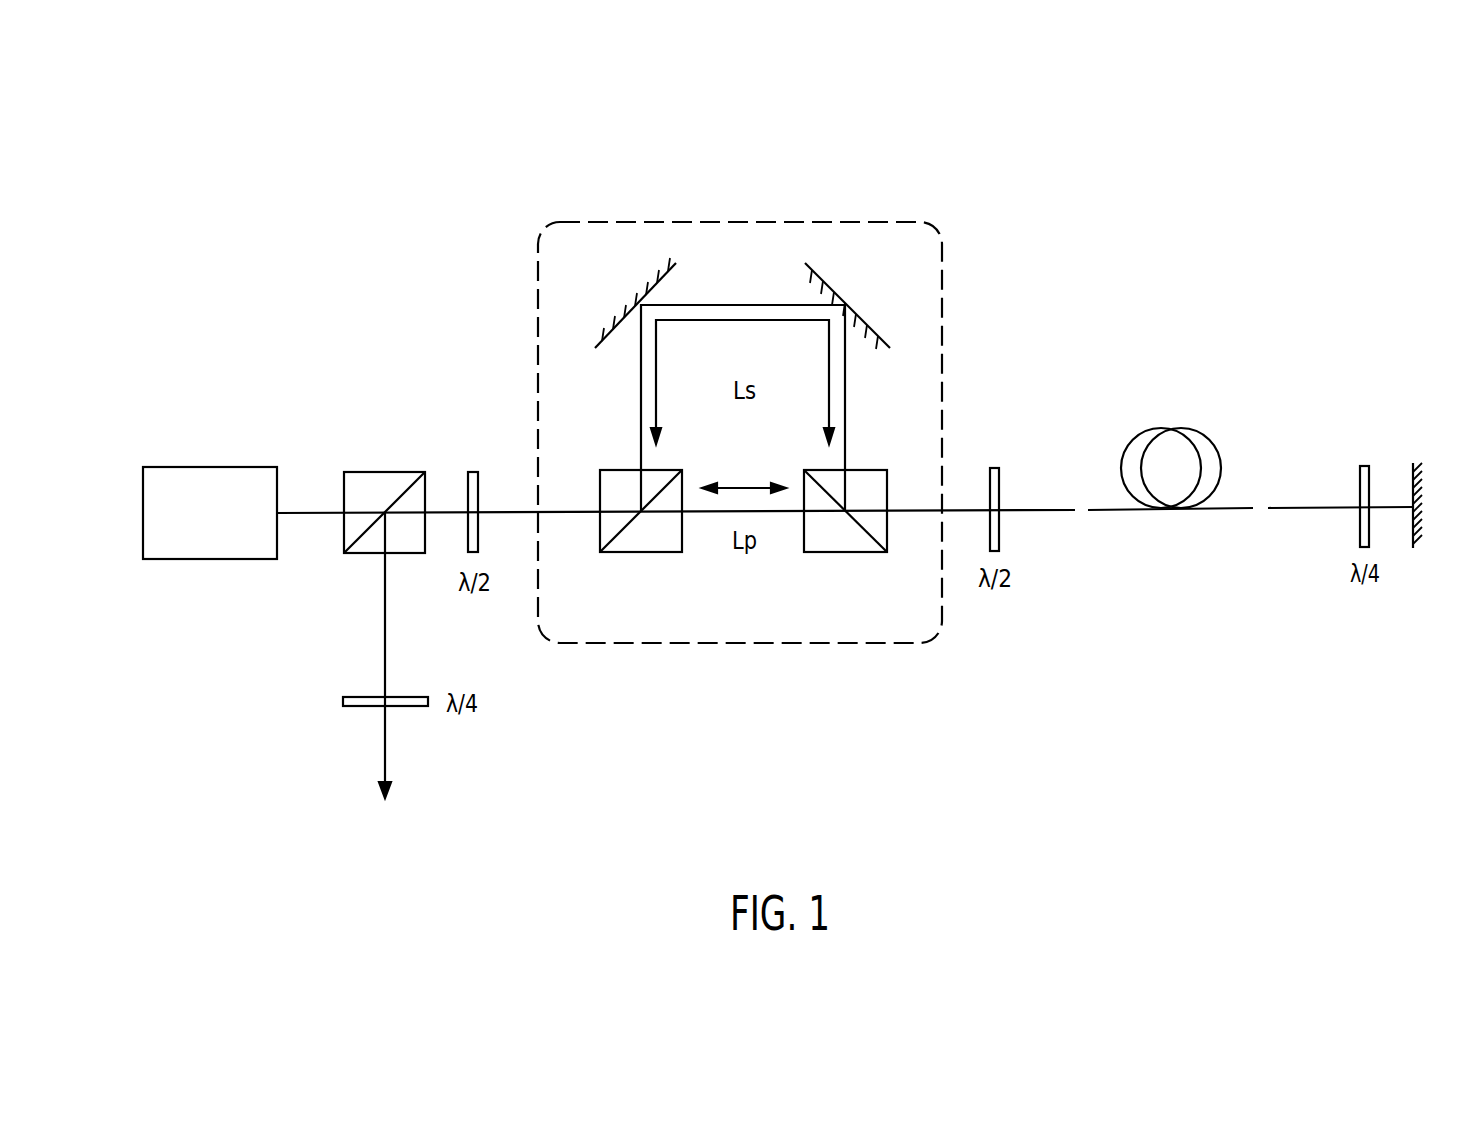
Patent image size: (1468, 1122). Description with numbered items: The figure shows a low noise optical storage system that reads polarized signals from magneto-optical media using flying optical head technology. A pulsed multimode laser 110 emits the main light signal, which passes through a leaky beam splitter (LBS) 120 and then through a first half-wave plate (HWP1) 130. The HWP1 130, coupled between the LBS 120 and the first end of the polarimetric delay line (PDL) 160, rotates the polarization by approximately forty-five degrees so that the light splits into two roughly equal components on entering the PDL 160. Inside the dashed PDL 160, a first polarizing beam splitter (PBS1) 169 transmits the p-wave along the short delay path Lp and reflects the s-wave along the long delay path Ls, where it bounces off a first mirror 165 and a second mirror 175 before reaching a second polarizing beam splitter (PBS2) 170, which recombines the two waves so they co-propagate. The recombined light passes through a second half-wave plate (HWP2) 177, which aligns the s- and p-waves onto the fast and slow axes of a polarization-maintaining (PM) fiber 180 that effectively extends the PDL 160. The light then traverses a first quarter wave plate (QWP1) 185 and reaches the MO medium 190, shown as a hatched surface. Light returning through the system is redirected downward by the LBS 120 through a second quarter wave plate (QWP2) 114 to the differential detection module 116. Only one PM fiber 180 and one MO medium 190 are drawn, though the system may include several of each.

The multimode laser 110 is at (198, 466).
The second quarter wave plate 114 is at (343, 700).
The differential detection module 116 is at (387, 849).
The leaky beam splitter 120 is at (417, 470).
The first half-wave plate 130 is at (493, 450).
The polarimetric delay line 160 is at (743, 222).
The first mirror 165 is at (632, 292).
The first polarizing beam splitter 169 is at (645, 555).
The second polarizing beam splitter 170 is at (850, 555).
The second mirror 175 is at (842, 290).
The second half-wave plate 177 is at (992, 464).
The polarization-maintaining fiber 180 is at (1180, 427).
The first quarter wave plate 185 is at (1373, 474).
The magneto-optical media 190 is at (1418, 548).